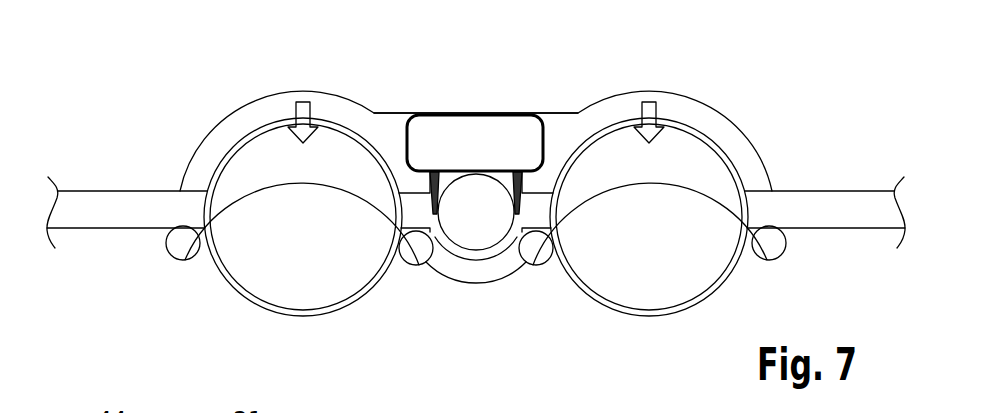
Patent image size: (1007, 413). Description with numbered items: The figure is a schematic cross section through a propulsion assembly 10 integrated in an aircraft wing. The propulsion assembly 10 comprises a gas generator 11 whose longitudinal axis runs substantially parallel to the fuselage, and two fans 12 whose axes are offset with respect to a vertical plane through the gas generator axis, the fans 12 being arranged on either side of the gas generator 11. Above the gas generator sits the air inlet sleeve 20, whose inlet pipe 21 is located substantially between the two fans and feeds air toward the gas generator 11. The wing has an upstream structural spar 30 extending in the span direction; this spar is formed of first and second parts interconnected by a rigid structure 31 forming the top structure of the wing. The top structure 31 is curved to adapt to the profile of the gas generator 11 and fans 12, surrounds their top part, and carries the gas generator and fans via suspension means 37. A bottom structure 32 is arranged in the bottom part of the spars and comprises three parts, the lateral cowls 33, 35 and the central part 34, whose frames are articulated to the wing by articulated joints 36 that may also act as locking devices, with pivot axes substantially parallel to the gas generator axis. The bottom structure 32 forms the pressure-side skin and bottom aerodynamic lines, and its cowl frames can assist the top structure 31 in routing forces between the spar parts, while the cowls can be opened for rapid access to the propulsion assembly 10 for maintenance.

The propulsion assembly 10 is at (721, 60).
The gas generator 11 is at (477, 193).
The fans 12 is at (252, 183).
The air inlet sleeve 20 is at (469, 139).
The inlet pipe 21 is at (443, 112).
The upstream structural spar 30 is at (92, 190).
The rigid structure 31 is at (553, 112).
The bottom structure 32 is at (497, 314).
The lateral cowl 33 is at (346, 325).
The cowl part 34 is at (469, 290).
The lateral cowl 35 is at (685, 325).
The articulated joints 36 is at (183, 245).
The suspension means 37 is at (302, 102).